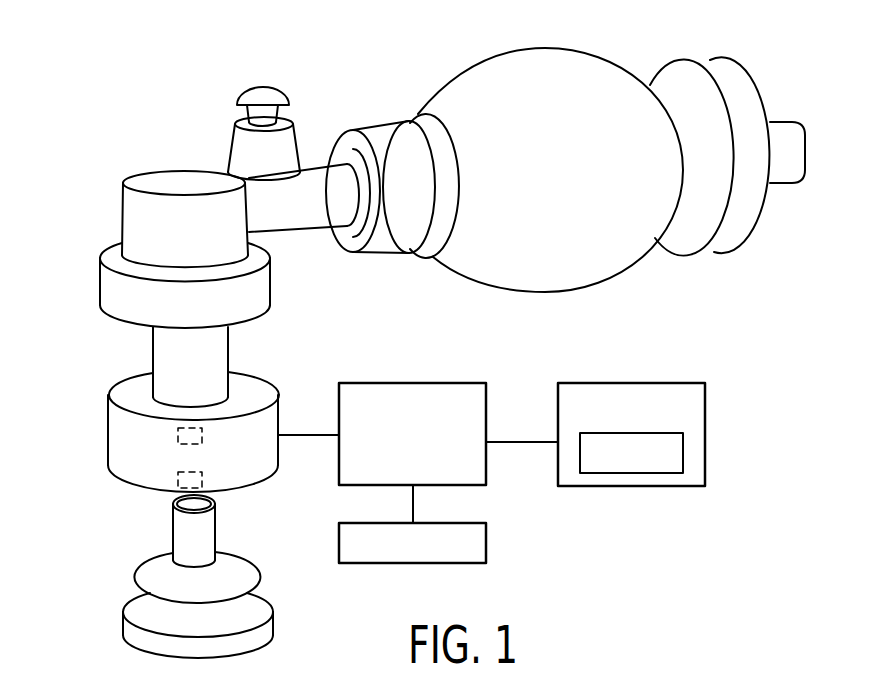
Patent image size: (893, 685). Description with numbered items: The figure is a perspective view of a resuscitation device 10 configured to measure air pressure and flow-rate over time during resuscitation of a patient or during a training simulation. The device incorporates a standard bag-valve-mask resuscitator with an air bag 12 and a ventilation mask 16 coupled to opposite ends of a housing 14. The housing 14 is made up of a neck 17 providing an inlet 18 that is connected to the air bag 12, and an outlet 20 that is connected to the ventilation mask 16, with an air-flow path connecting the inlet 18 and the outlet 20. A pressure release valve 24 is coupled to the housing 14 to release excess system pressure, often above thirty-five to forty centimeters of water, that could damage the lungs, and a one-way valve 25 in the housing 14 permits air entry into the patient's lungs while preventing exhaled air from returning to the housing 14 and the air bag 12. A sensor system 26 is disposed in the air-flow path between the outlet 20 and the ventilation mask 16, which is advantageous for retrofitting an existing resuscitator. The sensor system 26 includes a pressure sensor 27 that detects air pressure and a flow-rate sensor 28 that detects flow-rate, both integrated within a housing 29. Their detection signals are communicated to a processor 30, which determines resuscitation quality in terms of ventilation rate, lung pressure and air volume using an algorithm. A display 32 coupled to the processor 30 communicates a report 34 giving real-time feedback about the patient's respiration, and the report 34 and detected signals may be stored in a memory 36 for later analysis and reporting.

The resuscitation device 10 is at (112, 55).
The air bag 12 is at (521, 49).
The housing 14 is at (122, 218).
The ventilation mask 16 is at (135, 598).
The neck 17 is at (295, 232).
The inlet 18 is at (335, 152).
The outlet 20 is at (152, 340).
The pressure release valve 24 is at (231, 148).
The one-way valve 25 is at (271, 275).
The sensor system 26 is at (108, 426).
The pressure sensor 27 is at (203, 435).
The flow-rate sensor 28 is at (203, 477).
The housing 29 is at (123, 479).
The processor 30 is at (413, 383).
The display 32 is at (633, 383).
The report 34 is at (683, 450).
The memory 36 is at (486, 543).